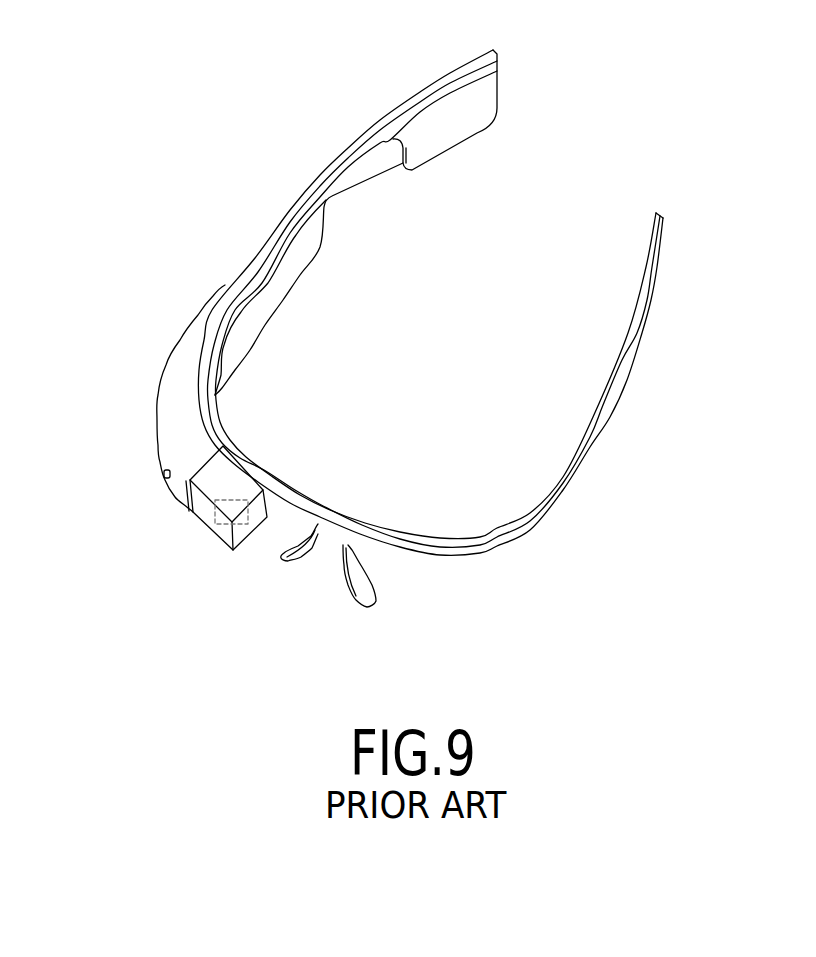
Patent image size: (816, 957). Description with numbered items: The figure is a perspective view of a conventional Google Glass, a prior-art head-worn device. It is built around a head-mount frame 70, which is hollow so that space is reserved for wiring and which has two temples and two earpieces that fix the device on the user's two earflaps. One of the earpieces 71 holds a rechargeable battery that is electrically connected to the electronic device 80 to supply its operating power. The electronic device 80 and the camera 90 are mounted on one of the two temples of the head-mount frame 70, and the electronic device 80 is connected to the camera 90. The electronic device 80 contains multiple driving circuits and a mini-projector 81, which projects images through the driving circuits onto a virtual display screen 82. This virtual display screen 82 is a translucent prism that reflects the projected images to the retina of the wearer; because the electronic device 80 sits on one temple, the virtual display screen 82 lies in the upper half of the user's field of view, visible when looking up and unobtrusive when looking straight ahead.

The head-mount frame 70 is at (310, 505).
The earpiece 71 is at (447, 130).
The electronic device 80 is at (267, 297).
The mini-projector 81 is at (207, 460).
The virtual display screen 82 is at (222, 523).
The camera 90 is at (166, 478).